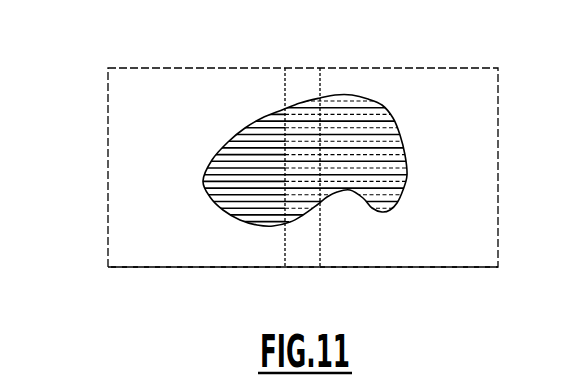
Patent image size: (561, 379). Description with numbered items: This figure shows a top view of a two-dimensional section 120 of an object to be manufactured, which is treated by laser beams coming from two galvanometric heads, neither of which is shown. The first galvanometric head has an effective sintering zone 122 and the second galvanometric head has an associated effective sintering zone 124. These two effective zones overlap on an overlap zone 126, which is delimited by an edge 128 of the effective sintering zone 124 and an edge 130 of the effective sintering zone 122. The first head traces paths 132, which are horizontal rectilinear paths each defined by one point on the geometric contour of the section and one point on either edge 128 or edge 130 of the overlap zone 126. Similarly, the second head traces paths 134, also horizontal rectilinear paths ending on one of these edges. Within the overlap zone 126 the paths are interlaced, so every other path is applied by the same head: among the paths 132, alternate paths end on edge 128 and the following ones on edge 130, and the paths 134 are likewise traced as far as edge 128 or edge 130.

The two-dimensional section 120 is at (376, 99).
The effective sintering zone 122 is at (108, 183).
The effective sintering zone 124 is at (432, 268).
The overlap zone 126 is at (303, 82).
The edge 128 is at (282, 80).
The edge 130 is at (322, 81).
The paths 132 is at (243, 132).
The paths 134 is at (368, 160).